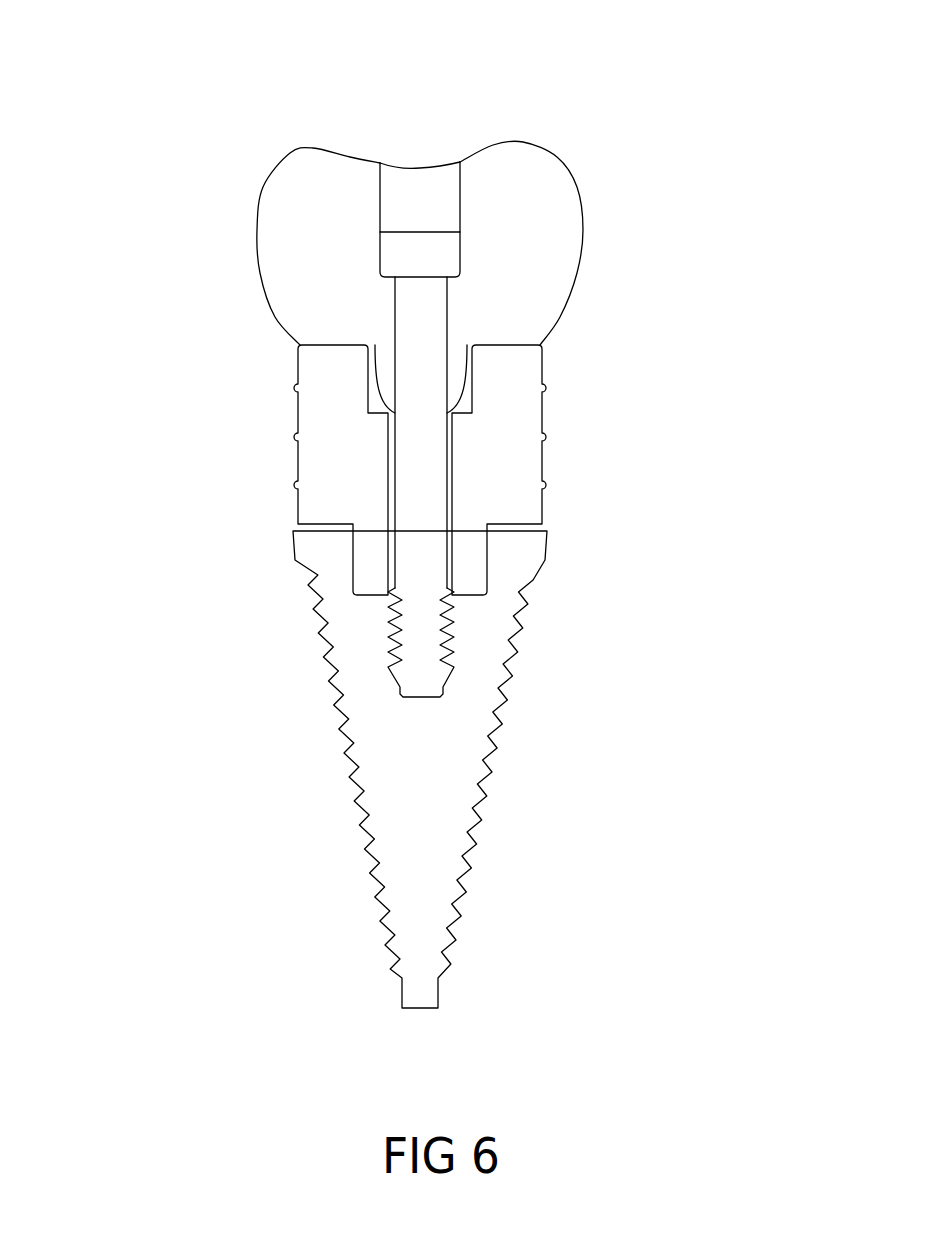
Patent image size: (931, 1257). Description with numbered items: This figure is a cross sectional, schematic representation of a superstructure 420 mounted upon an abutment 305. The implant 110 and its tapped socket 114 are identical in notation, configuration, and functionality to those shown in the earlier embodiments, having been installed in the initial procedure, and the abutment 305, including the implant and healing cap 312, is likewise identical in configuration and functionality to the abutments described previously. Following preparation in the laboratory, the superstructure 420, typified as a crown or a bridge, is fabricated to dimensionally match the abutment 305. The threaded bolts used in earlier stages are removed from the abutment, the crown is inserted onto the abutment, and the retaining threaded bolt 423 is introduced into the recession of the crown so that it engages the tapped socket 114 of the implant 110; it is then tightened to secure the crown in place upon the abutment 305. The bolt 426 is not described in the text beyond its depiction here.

The implant 110 is at (503, 697).
The tapped socket 114 is at (447, 650).
The abutment 305 is at (190, 299).
The implant and healing cap 312 is at (543, 413).
The superstructure 420 is at (260, 187).
The retaining threaded bolt 423 is at (413, 190).
The screw 426 is at (397, 463).